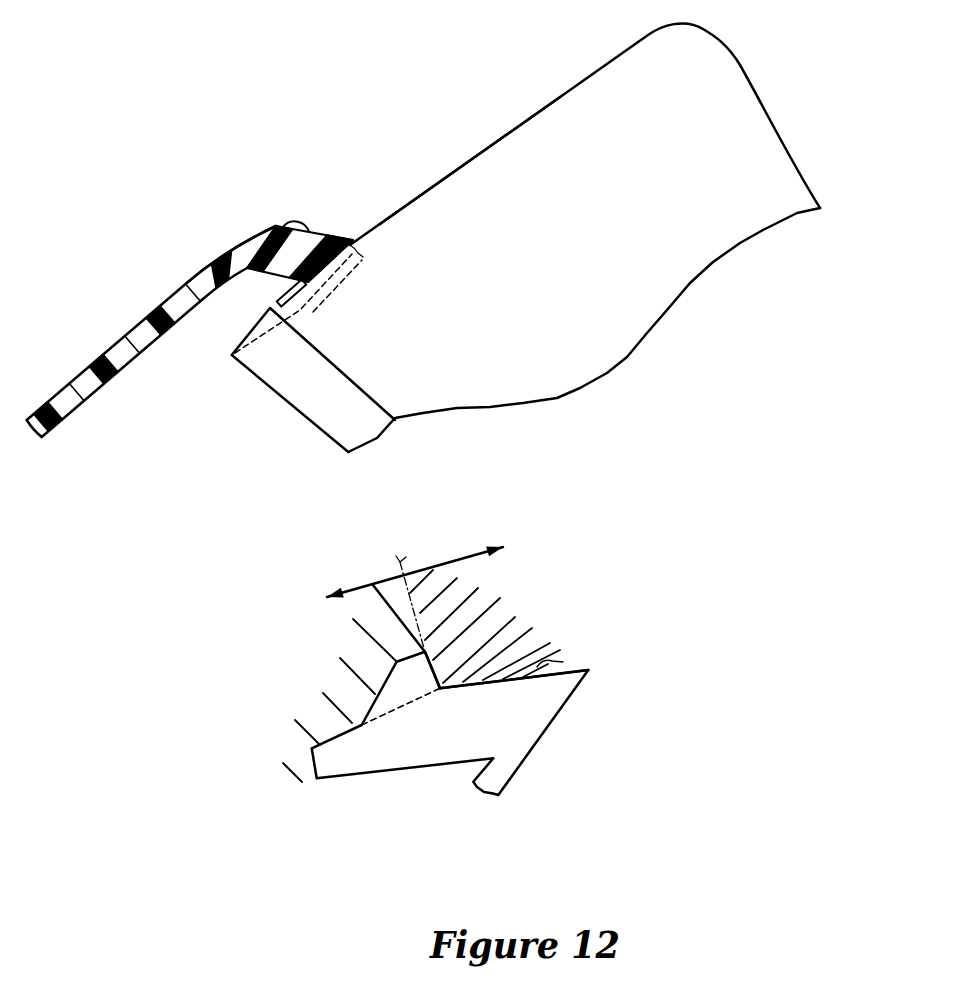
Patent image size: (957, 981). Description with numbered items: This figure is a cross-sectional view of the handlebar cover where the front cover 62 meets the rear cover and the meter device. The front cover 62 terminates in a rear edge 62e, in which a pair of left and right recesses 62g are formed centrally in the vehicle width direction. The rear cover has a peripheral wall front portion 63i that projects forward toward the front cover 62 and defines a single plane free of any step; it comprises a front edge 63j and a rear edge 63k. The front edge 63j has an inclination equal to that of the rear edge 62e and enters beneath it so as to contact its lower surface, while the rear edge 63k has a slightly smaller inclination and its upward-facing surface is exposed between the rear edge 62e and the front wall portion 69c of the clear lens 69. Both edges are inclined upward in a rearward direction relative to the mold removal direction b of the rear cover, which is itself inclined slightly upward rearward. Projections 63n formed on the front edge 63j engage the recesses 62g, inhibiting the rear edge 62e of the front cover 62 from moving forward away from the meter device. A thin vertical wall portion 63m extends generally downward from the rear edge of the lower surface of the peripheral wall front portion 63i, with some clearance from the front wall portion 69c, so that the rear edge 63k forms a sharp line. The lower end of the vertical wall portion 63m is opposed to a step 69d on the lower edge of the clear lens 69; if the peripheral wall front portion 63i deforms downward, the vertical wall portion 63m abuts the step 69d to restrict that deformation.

The front cover 62 is at (65, 376).
The rear edge of the front cover 62e is at (297, 221).
The recess 62g is at (250, 237).
The peripheral wall front portion 63i is at (342, 241).
The vertical wall portion 63m is at (297, 302).
The projection 63n is at (275, 224).
The front edge 63j is at (330, 732).
The rear edge 63k is at (567, 662).
The clear lens 69 is at (560, 88).
The front wall portion 69c is at (450, 174).
The step 69d is at (270, 309).
The mold removal direction b is at (452, 550).